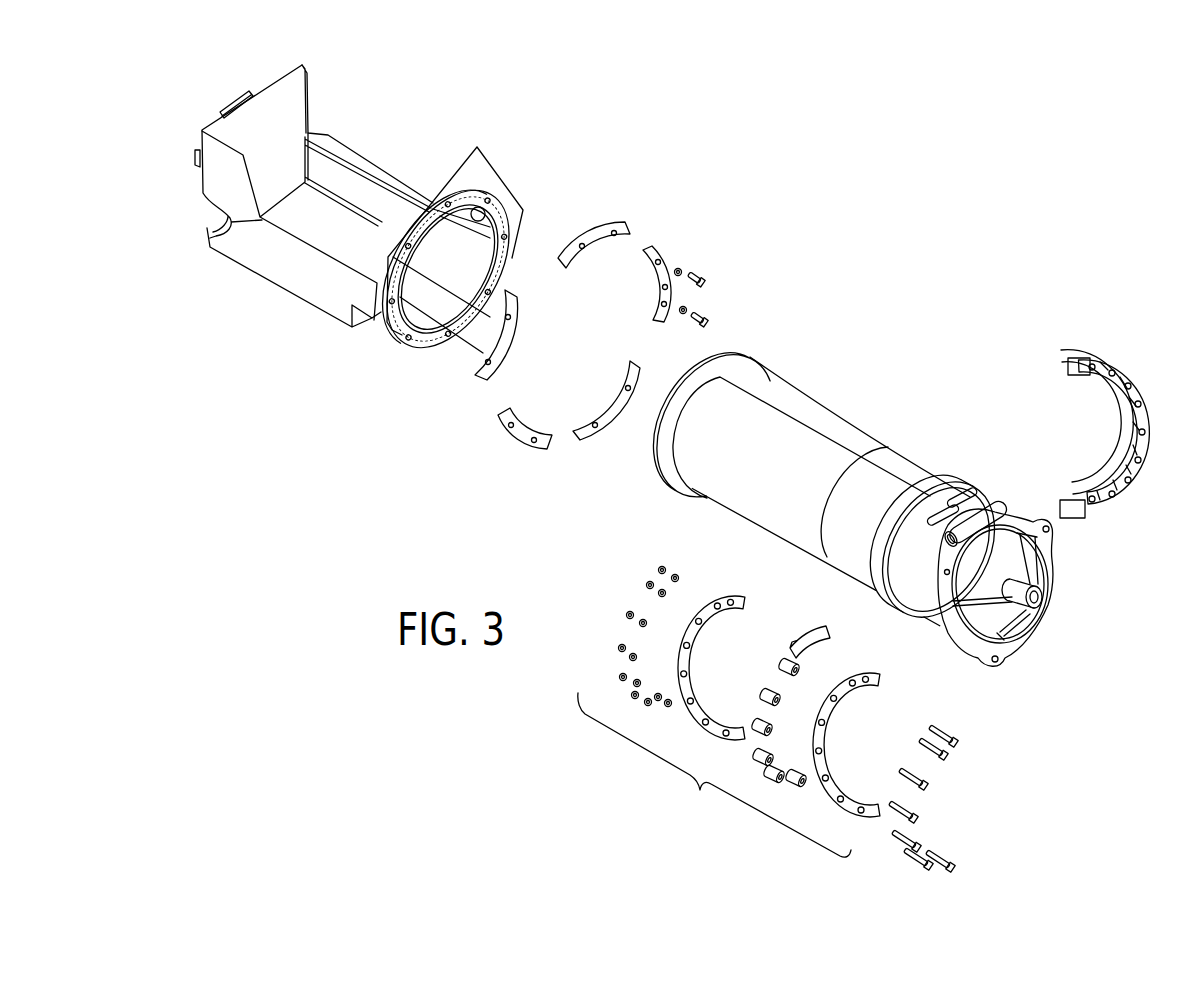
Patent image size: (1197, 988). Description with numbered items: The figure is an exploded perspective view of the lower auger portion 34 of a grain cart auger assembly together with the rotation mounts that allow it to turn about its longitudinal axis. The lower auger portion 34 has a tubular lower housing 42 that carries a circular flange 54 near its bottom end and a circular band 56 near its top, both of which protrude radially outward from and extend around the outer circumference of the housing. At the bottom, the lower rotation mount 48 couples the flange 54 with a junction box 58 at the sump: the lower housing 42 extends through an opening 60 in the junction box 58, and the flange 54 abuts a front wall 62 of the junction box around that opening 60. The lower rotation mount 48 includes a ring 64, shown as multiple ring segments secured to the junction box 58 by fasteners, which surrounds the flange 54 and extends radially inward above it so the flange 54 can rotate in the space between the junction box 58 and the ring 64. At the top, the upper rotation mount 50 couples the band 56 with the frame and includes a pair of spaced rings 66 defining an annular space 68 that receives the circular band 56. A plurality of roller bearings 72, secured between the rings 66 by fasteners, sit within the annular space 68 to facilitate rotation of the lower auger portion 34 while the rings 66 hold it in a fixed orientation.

The lower auger portion 34 is at (841, 483).
The lower housing 42 is at (765, 530).
The lower rotation mount 48 is at (676, 235).
The upper rotation mount 50 is at (874, 574).
The circular flange 54 is at (755, 362).
The circular band 56 is at (950, 482).
The junction box 58 is at (295, 293).
The opening 60 is at (478, 221).
The front wall 62 is at (413, 333).
The ring 64 is at (511, 454).
The spaced rings 66 is at (745, 605).
The annular space 68 is at (1124, 436).
The roller bearings 72 is at (1112, 452).